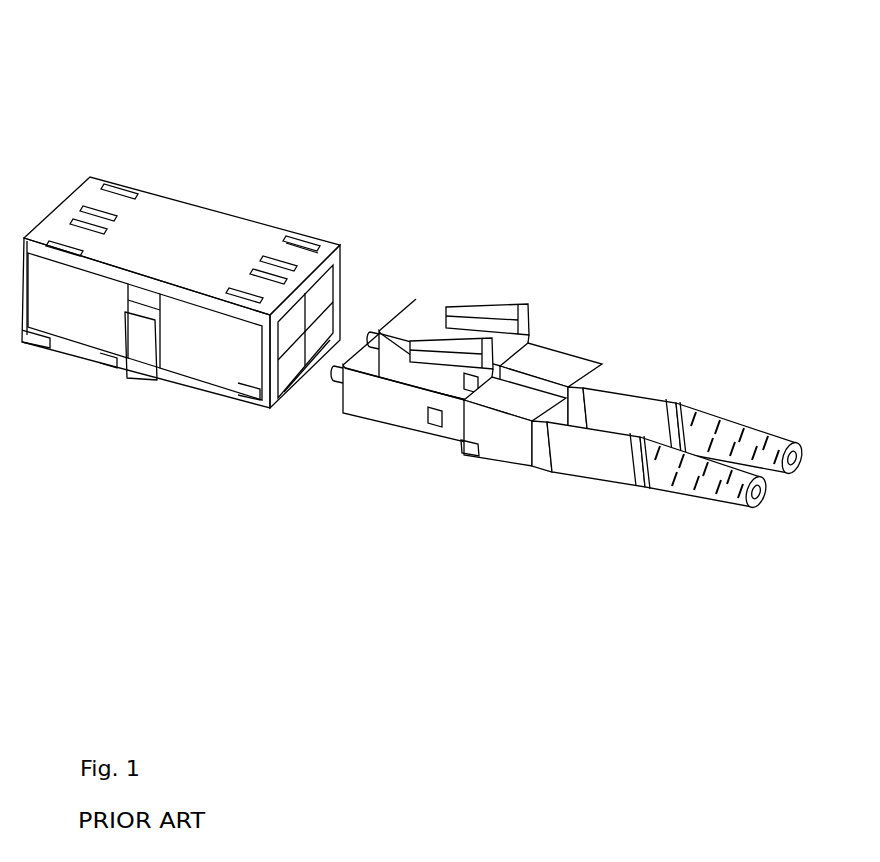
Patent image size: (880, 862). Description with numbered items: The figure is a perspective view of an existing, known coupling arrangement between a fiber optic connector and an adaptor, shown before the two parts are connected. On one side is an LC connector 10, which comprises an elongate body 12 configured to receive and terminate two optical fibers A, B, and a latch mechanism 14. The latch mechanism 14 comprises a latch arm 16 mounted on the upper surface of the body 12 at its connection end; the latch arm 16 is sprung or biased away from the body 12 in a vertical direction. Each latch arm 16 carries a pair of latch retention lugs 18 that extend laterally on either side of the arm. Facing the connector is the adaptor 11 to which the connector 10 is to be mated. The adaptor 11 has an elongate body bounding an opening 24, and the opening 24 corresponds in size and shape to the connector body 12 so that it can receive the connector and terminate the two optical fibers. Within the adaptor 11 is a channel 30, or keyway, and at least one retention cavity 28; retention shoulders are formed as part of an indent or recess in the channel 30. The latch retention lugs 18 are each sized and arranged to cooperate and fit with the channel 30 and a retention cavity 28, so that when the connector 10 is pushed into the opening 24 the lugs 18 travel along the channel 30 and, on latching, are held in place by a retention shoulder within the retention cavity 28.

The LC connector 10 is at (578, 345).
The adaptor 11 is at (212, 252).
The elongate body 12 is at (350, 403).
The latch mechanism 14 is at (415, 380).
The latch arm 16 is at (504, 325).
The latch retention lugs 18 is at (431, 364).
The opening 24 is at (288, 376).
The retention cavity 28 is at (316, 253).
The channel 30 is at (278, 338).
The optical fiber A is at (669, 395).
The optical fiber B is at (613, 483).